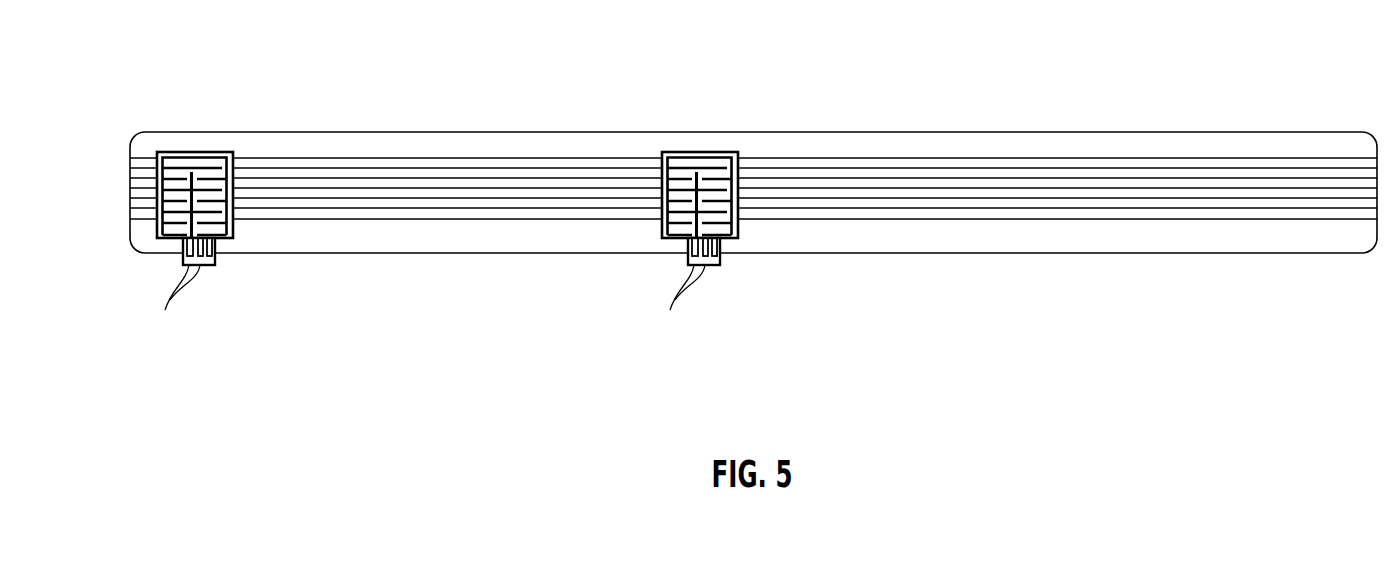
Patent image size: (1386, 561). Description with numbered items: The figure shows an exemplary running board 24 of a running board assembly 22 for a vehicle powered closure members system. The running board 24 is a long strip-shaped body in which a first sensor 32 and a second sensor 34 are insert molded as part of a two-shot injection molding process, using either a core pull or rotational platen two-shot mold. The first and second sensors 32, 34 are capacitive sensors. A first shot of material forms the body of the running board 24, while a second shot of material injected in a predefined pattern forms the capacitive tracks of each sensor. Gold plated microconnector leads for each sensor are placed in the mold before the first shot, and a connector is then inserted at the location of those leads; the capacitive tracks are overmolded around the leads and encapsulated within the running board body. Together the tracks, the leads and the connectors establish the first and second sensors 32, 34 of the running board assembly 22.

The running board assembly 22 is at (753, 186).
The running board 24 is at (1040, 238).
The first sensor 32 is at (774, 200).
The second sensor 34 is at (267, 200).